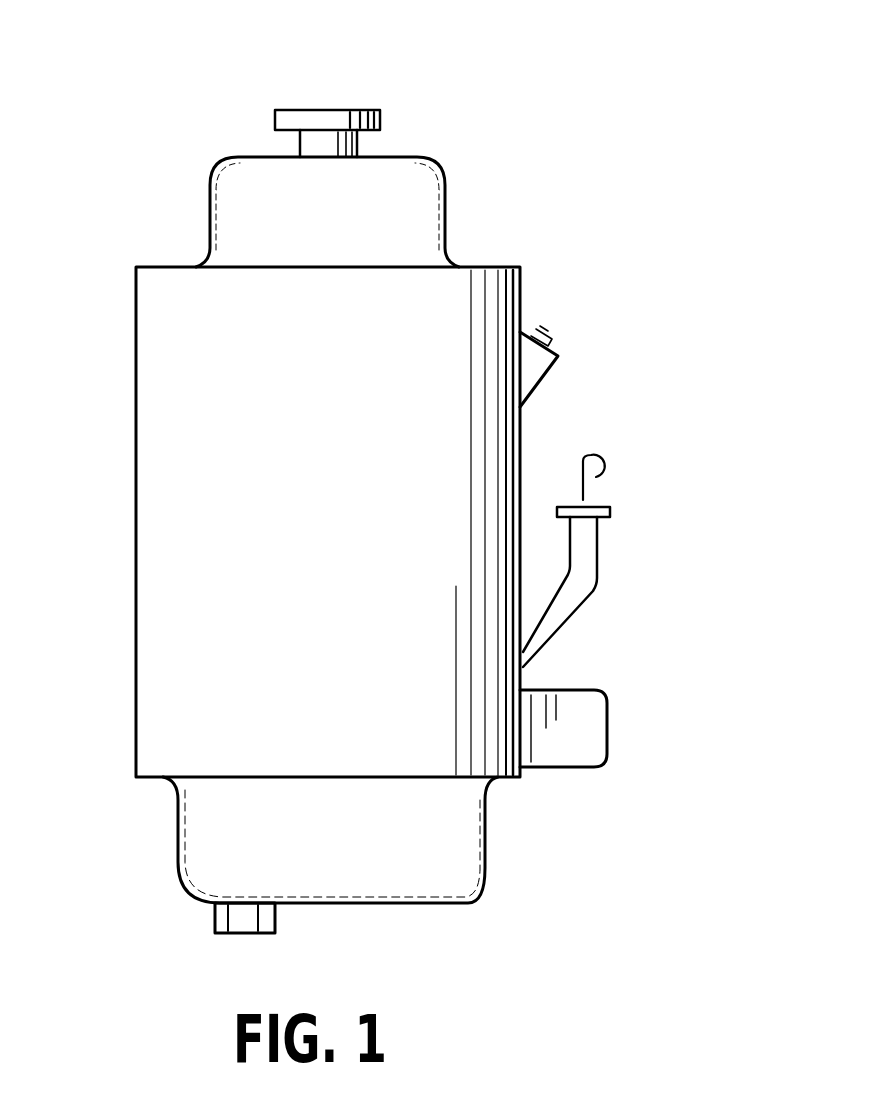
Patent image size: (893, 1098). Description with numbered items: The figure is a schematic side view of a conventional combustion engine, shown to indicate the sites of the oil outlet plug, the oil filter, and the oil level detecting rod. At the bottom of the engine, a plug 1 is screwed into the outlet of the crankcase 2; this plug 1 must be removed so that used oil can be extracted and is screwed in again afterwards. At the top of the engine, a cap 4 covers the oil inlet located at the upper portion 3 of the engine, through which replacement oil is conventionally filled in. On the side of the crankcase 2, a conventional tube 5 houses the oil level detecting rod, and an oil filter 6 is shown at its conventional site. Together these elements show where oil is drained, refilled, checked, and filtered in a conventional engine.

The plug 1 is at (216, 918).
The crankcase 2 is at (178, 815).
The upper portion 3 is at (210, 210).
The cap 4 is at (275, 116).
The tube 5 is at (590, 598).
The oil filter 6 is at (605, 753).